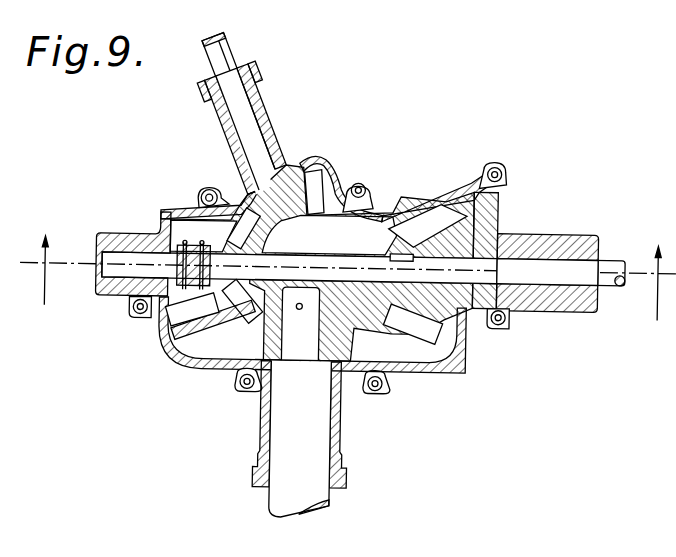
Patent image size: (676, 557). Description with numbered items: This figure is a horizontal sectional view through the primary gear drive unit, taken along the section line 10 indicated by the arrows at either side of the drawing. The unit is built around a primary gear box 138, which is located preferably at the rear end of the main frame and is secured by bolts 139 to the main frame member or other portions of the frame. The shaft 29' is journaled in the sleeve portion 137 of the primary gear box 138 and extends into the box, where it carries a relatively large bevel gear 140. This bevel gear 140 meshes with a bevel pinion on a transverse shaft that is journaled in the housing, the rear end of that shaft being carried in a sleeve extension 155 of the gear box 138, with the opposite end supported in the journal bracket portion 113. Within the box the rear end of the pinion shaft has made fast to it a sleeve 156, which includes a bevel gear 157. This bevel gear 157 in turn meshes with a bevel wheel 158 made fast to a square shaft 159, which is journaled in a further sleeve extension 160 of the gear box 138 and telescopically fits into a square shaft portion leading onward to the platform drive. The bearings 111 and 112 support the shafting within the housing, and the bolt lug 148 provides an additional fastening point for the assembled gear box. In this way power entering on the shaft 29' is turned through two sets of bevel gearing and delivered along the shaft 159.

The section line 10 is at (346, 293).
The shaft 29' is at (333, 440).
The bearing 111 is at (393, 228).
The bearing 112 is at (313, 244).
The housing extension 113 is at (553, 298).
The sleeve portion 137 is at (341, 416).
The primary gear box 138 is at (419, 190).
The bolts 139 is at (245, 394).
The bevel gear 140 is at (160, 349).
The bolt lug 148 is at (448, 379).
The sleeve extension 155 is at (148, 236).
The sleeve 156 is at (162, 336).
The bevel gear 157 is at (197, 214).
The bevel wheel 158 is at (312, 160).
The shaft 159 is at (219, 46).
The sleeve extension 160 is at (262, 110).